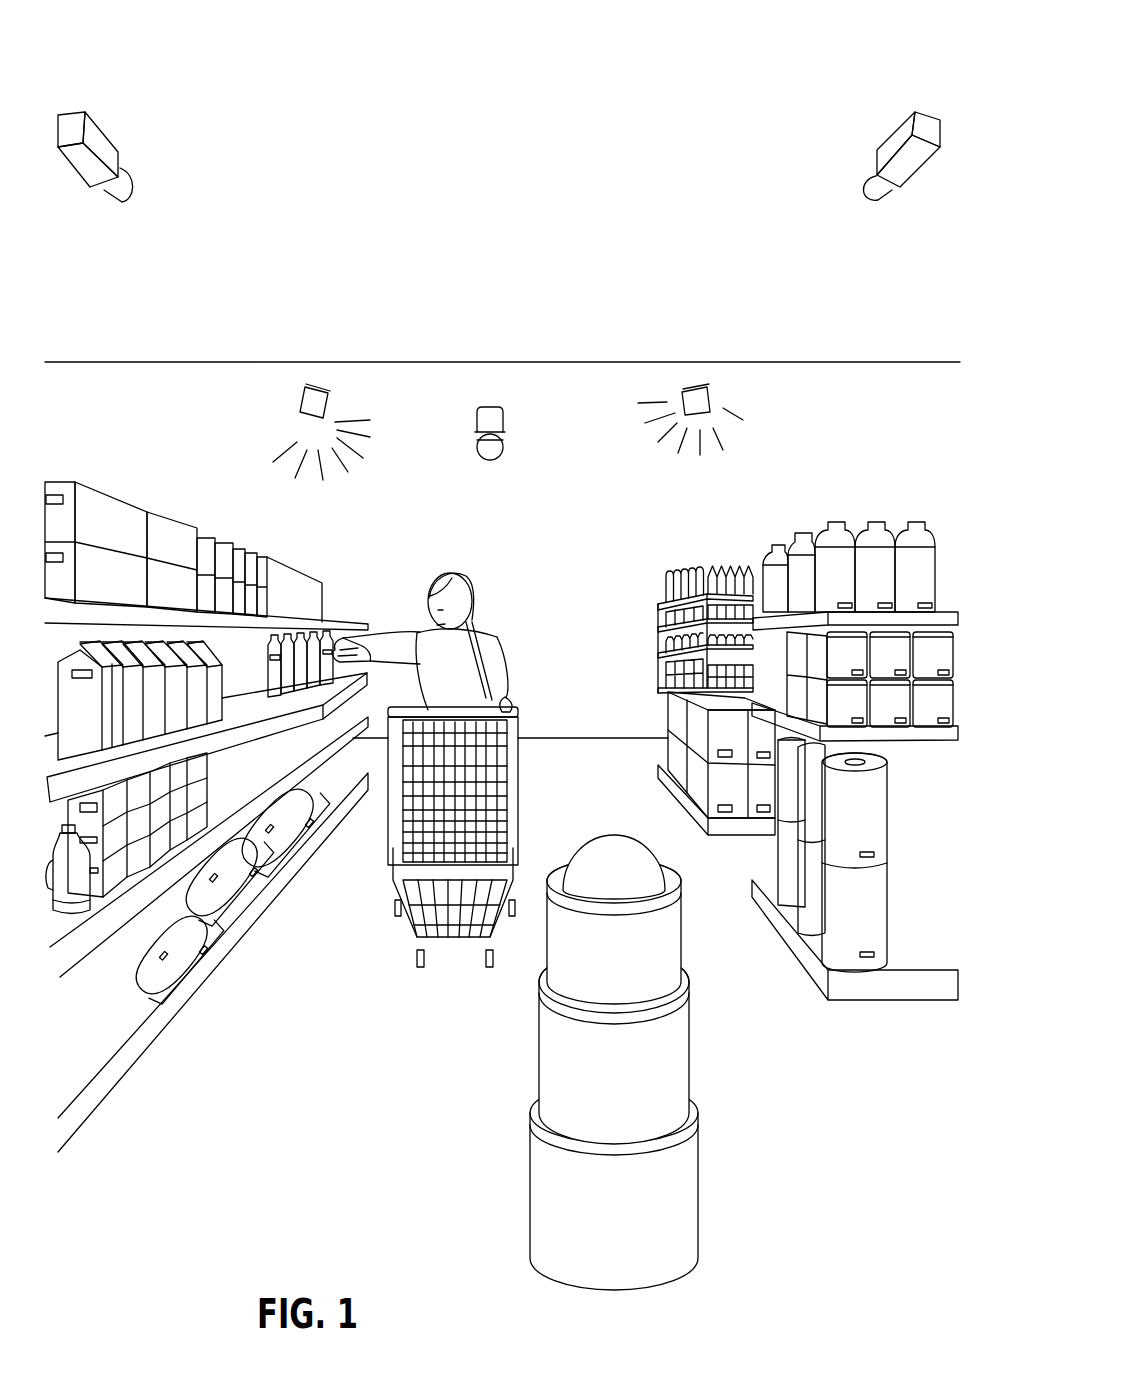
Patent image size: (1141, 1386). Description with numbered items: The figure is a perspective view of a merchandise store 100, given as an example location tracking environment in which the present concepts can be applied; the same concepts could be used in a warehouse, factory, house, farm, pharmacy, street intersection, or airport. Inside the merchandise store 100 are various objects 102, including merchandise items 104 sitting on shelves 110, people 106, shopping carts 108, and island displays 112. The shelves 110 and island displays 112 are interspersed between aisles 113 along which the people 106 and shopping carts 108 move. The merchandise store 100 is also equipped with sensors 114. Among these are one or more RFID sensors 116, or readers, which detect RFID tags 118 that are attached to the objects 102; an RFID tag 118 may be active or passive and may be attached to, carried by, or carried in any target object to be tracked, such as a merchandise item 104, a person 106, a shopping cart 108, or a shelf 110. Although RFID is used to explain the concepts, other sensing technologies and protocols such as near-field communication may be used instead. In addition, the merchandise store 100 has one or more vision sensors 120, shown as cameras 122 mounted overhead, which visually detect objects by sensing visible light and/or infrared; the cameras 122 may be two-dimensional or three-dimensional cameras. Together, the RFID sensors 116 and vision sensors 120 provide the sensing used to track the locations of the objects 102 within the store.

The merchandise store 100 is at (801, 1197).
The objects 102 is at (110, 406).
The merchandise items 104 is at (330, 631).
The people 106 is at (461, 574).
The shopping carts 108 is at (522, 752).
The shelves 110 is at (656, 602).
The island displays 112 is at (683, 957).
The aisles 113 is at (367, 1041).
The sensors 114 is at (252, 469).
The RFID sensors 116 is at (303, 397).
The RFID tags 118 is at (385, 637).
The vision sensors 120 is at (748, 40).
The cameras 122 is at (102, 127).